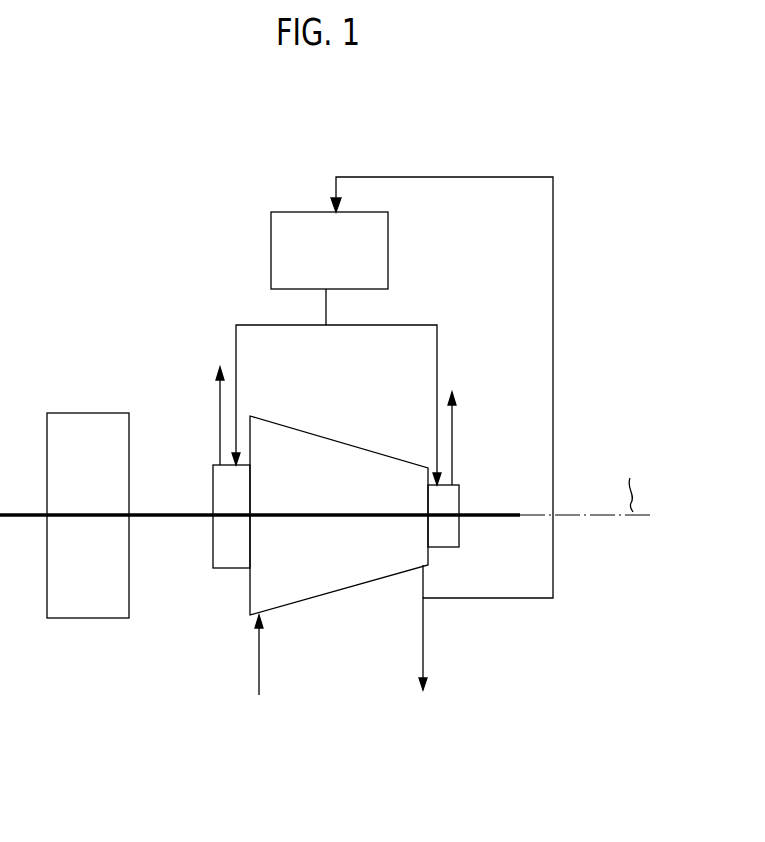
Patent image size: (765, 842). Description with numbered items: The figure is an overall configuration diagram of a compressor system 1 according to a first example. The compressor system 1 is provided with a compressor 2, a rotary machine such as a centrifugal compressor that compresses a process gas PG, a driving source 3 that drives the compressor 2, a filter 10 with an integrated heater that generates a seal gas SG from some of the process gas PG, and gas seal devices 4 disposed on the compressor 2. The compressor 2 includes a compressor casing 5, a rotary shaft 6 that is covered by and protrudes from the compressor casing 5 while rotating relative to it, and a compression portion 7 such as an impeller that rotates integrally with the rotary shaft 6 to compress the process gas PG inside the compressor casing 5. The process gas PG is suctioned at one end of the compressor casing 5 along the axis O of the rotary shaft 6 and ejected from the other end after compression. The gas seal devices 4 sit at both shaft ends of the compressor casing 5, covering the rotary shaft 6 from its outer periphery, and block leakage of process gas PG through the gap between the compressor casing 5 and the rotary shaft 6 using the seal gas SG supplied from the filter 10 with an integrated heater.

The compressor system 1 is at (128, 326).
The compressor 2 is at (339, 480).
The driving source 3 is at (97, 413).
The gas seal devices 4 is at (225, 568).
The compressor casing 5 is at (339, 484).
The compression portion 7 is at (277, 421).
The rotary shaft 6 is at (322, 513).
The filter with an integrated heater 10 is at (292, 212).